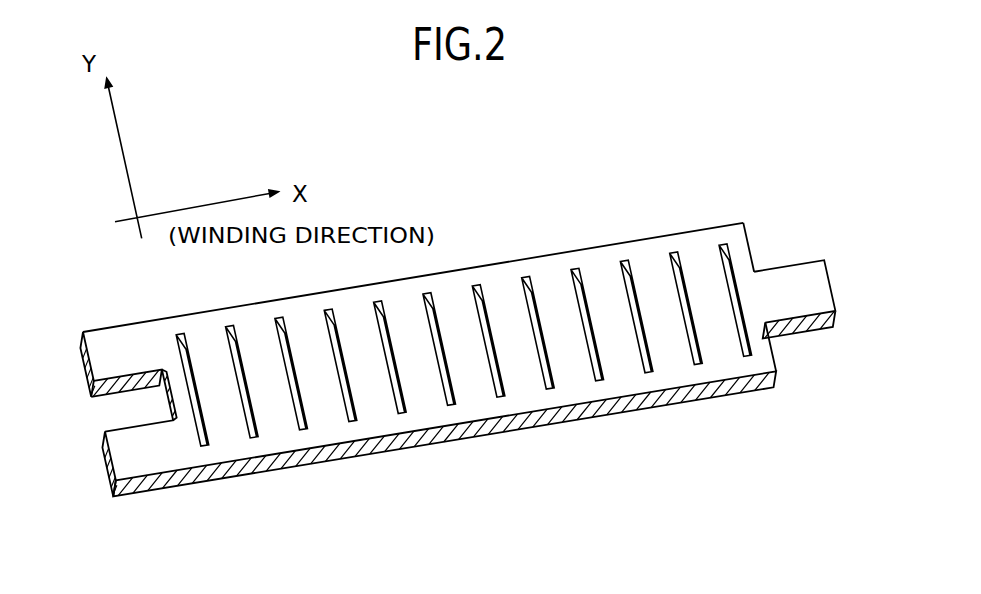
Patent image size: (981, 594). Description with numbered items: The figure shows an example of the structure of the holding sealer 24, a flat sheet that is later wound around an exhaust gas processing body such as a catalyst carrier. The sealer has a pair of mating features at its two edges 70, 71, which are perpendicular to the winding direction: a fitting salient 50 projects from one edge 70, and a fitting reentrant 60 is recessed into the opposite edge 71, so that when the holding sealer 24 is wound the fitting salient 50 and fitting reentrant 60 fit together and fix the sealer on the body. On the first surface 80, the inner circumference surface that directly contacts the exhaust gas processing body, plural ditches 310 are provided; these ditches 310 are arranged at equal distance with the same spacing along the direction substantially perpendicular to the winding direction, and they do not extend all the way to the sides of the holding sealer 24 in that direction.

The holding sealer 24 is at (560, 220).
The ditches 310 is at (202, 448).
The fitting salient 50 is at (793, 299).
The fitting reentrant 60 is at (130, 410).
The edge 70 is at (821, 258).
The edge 71 is at (105, 392).
The first surface 80 is at (748, 247).